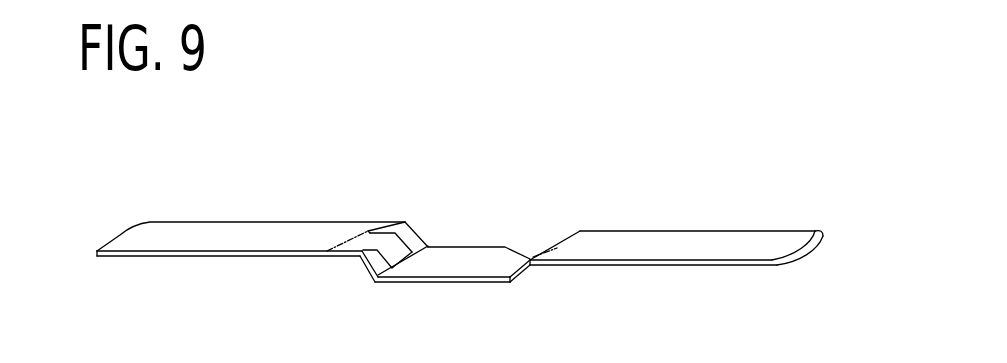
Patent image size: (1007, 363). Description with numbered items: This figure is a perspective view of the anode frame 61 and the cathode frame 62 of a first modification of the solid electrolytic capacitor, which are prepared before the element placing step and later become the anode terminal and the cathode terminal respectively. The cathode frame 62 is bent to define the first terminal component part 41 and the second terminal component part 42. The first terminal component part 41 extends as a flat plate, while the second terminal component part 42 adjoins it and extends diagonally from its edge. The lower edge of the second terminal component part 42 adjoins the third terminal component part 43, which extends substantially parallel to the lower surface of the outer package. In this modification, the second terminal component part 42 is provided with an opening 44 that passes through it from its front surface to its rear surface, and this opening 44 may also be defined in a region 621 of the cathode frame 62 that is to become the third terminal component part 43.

The first terminal component part 41 is at (498, 257).
The second terminal component part 42 is at (404, 250).
The third terminal component part 43 is at (397, 189).
The opening 44 is at (391, 254).
The anode frame 61 is at (672, 237).
The cathode frame 62 is at (292, 233).
The region of the cathode frame 621 is at (387, 227).